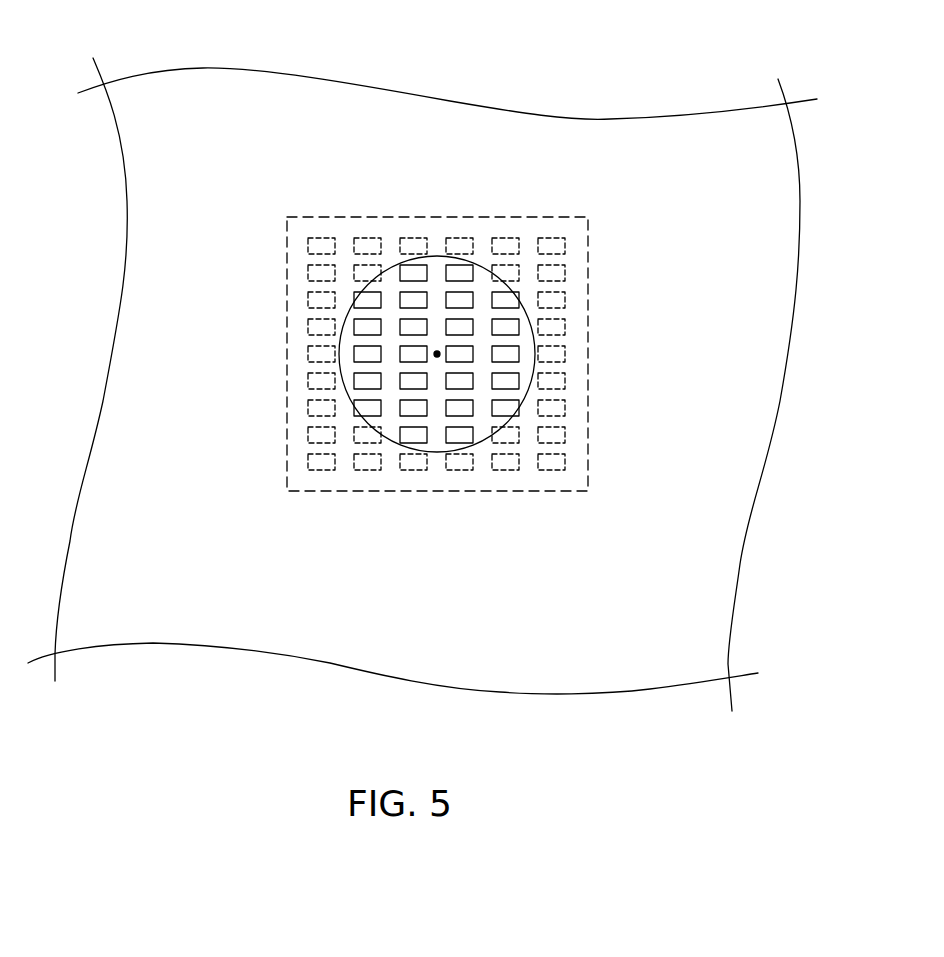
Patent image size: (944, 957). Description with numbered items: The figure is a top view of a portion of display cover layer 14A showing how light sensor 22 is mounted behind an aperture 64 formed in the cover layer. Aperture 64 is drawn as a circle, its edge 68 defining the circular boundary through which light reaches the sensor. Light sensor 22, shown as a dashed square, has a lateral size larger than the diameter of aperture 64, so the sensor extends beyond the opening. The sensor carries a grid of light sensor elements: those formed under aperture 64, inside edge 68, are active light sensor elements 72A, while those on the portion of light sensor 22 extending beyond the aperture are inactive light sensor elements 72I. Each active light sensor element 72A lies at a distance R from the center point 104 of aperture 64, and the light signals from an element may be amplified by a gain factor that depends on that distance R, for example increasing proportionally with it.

The display cover layer 14A is at (289, 85).
The light sensor 22 is at (552, 206).
The edge of aperture 68 is at (429, 246).
The aperture 64 is at (436, 406).
The active light sensor elements 72A is at (460, 403).
The inactive light sensor elements 72I is at (555, 316).
The center point 104 is at (429, 346).
The distance R is at (429, 345).